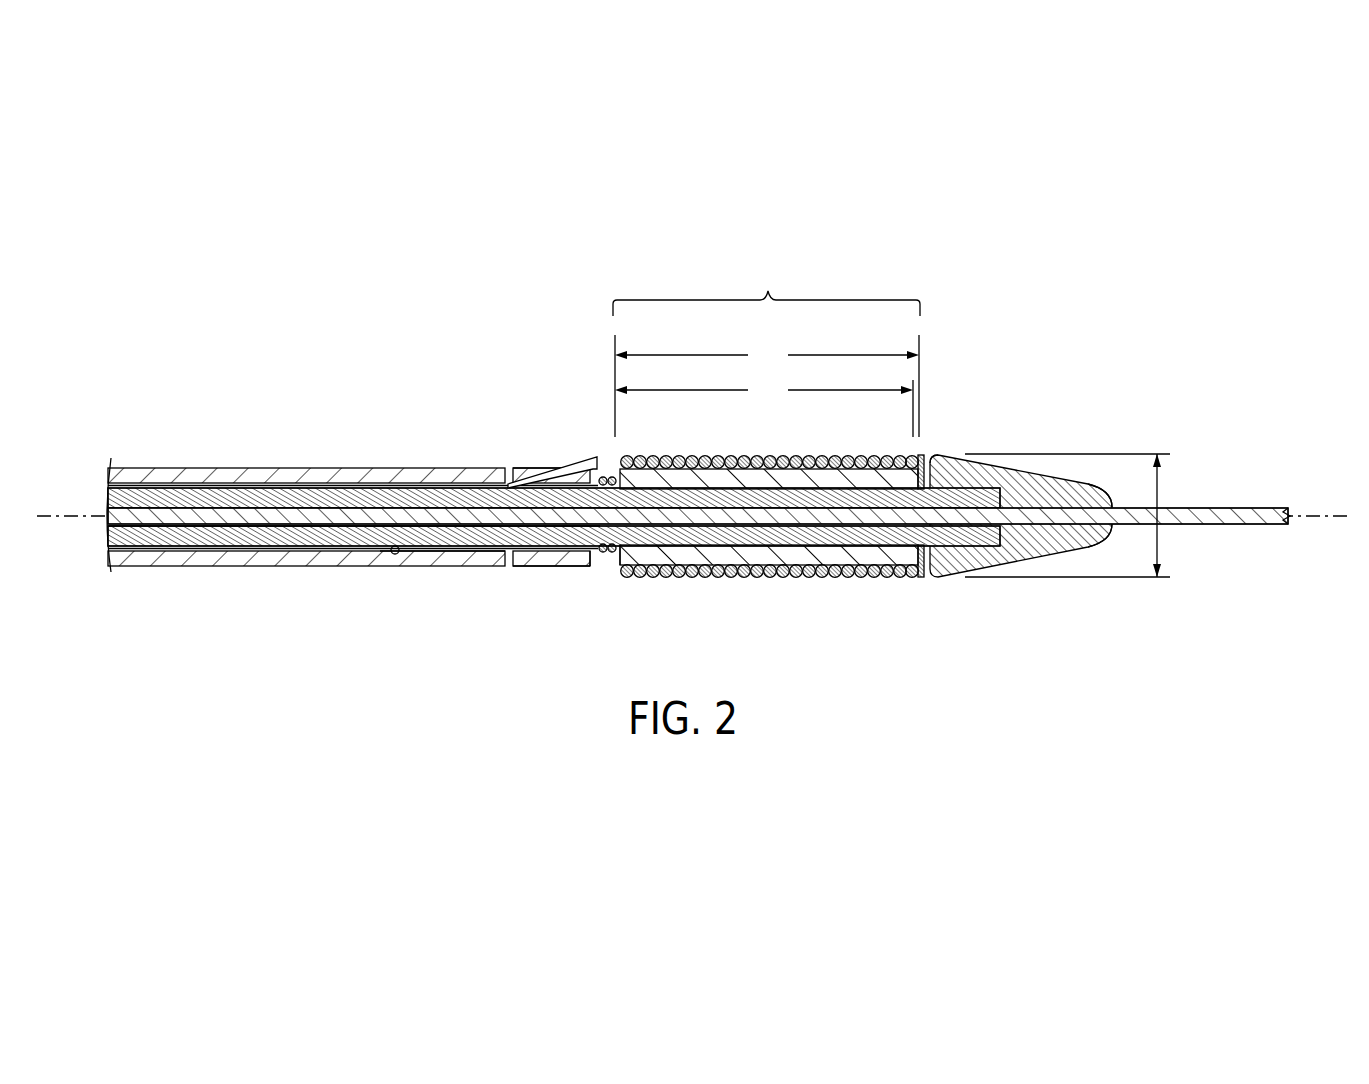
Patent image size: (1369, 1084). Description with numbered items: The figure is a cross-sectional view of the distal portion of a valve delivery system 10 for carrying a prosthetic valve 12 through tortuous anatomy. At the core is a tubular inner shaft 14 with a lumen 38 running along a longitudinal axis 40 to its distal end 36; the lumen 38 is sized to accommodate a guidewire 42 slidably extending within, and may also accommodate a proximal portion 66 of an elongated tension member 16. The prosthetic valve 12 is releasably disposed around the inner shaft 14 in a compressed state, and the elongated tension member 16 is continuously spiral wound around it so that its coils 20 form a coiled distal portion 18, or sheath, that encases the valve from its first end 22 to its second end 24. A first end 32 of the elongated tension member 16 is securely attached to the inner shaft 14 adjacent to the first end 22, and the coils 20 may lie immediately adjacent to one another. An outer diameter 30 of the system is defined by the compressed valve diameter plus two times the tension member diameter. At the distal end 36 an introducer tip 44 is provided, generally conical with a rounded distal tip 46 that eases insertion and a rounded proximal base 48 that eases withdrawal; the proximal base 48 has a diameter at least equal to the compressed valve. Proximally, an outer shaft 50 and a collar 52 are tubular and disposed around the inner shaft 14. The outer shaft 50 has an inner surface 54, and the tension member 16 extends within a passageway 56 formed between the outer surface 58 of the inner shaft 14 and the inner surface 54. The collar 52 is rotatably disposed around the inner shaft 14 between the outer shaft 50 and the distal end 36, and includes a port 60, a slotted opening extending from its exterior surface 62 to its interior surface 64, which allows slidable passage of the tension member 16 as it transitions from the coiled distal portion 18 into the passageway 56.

The valve delivery system 10 is at (250, 318).
The prosthetic valve 12 is at (722, 573).
The inner shaft 14 is at (200, 488).
The elongated tension member 16 is at (323, 488).
The coiled distal portion 18 is at (766, 348).
The coils 20 is at (672, 455).
The first end of the prosthetic valve 22 is at (610, 556).
The second end of the prosthetic valve 24 is at (924, 578).
The outer diameter 30 is at (1162, 487).
The first end of the elongated tension member 32 is at (602, 562).
The distal end of the inner shaft 36 is at (1105, 552).
The lumen 38 is at (228, 536).
The longitudinal axis 40 is at (1336, 516).
The guidewire 42 is at (175, 520).
The introducer tip 44 is at (1010, 560).
The distal tip 46 is at (1103, 490).
The proximal base 48 is at (927, 456).
The outer shaft 50 is at (270, 472).
The collar 52 is at (514, 566).
The inner surface of the outer shaft 54 is at (397, 554).
The passageway 56 is at (442, 552).
The outer surface of the inner shaft 58 is at (318, 552).
The port 60 is at (545, 469).
The exterior surface of the collar 62 is at (580, 562).
The interior surface of the collar 64 is at (533, 566).
The proximal portion of the elongated tension member 66 is at (142, 485).